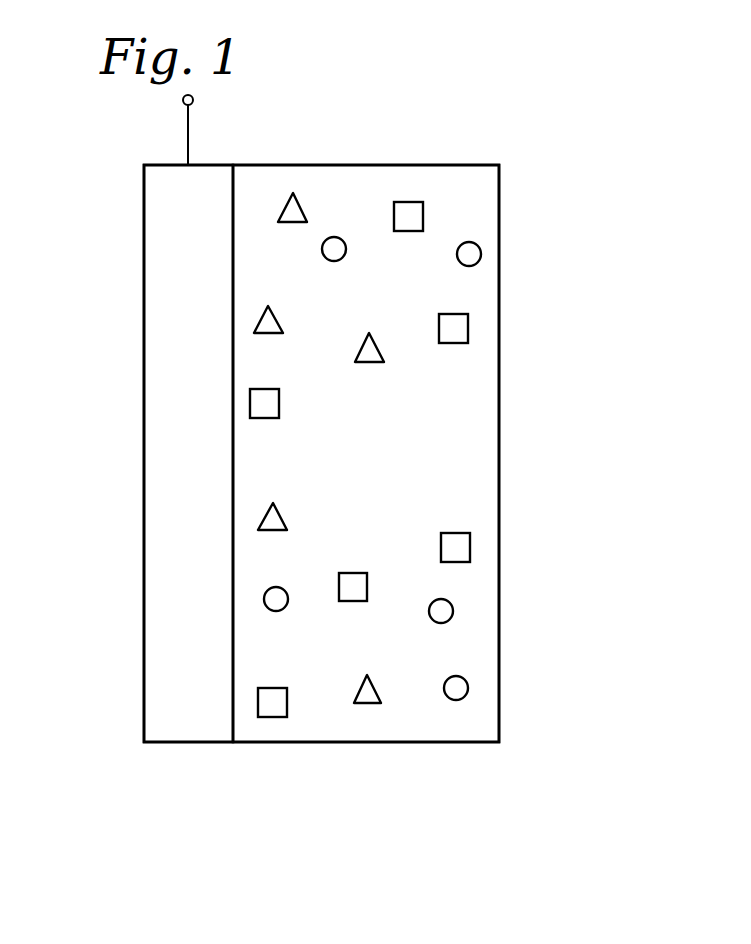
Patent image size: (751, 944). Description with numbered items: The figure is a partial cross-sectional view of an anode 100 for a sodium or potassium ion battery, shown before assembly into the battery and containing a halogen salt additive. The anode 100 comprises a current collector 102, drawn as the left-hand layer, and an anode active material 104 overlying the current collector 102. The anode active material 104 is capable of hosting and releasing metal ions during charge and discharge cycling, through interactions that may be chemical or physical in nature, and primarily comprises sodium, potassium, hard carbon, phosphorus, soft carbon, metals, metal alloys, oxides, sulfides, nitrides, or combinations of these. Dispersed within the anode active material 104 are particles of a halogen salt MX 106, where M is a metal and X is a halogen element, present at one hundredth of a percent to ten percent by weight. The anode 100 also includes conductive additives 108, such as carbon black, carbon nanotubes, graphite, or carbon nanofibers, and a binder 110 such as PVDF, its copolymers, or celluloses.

The anode 100 is at (512, 130).
The current collector 102 is at (181, 693).
The anode active material 104 is at (390, 516).
The halogen salt (MX) 106 is at (457, 543).
The conductive additives 108 is at (458, 688).
The binder 110 is at (366, 690).